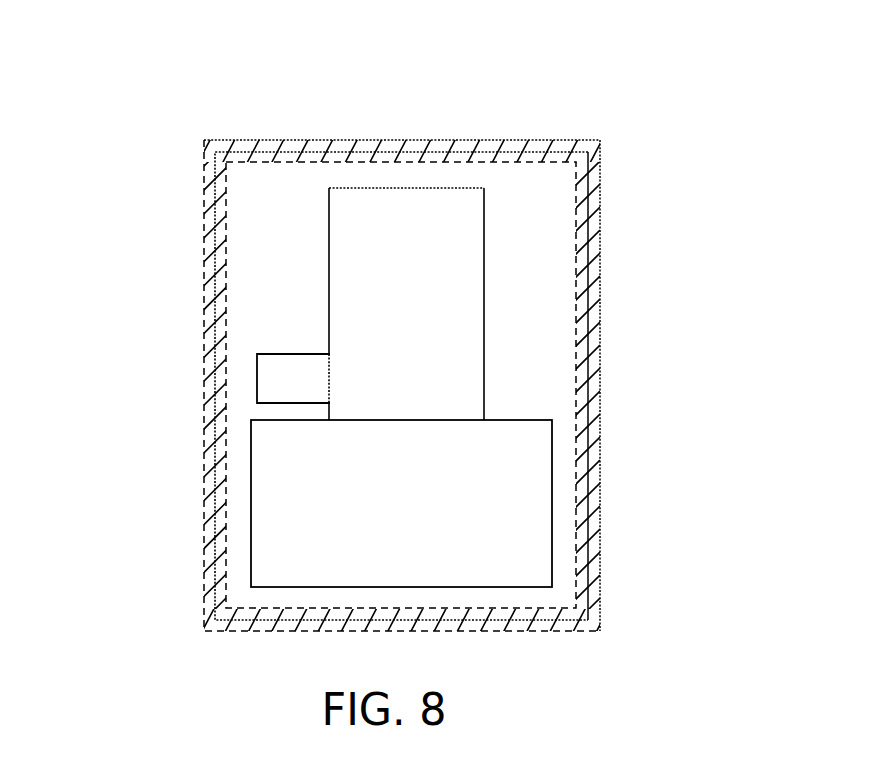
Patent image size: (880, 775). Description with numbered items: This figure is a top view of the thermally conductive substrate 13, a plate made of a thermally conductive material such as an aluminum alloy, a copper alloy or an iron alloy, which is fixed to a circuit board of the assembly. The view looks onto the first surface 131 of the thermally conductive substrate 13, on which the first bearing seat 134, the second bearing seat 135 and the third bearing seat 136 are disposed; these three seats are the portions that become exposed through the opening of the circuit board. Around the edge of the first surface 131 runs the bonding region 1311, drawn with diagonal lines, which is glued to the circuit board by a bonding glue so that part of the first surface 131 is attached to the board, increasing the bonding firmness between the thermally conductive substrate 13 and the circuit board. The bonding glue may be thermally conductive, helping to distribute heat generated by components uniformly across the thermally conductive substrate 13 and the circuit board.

The thermally conductive substrate 13 is at (24, 80).
The first surface 131 is at (555, 267).
The bonding region 1311 is at (553, 154).
The first bearing seat 134 is at (530, 525).
The second bearing seat 135 is at (415, 218).
The third bearing seat 136 is at (281, 386).